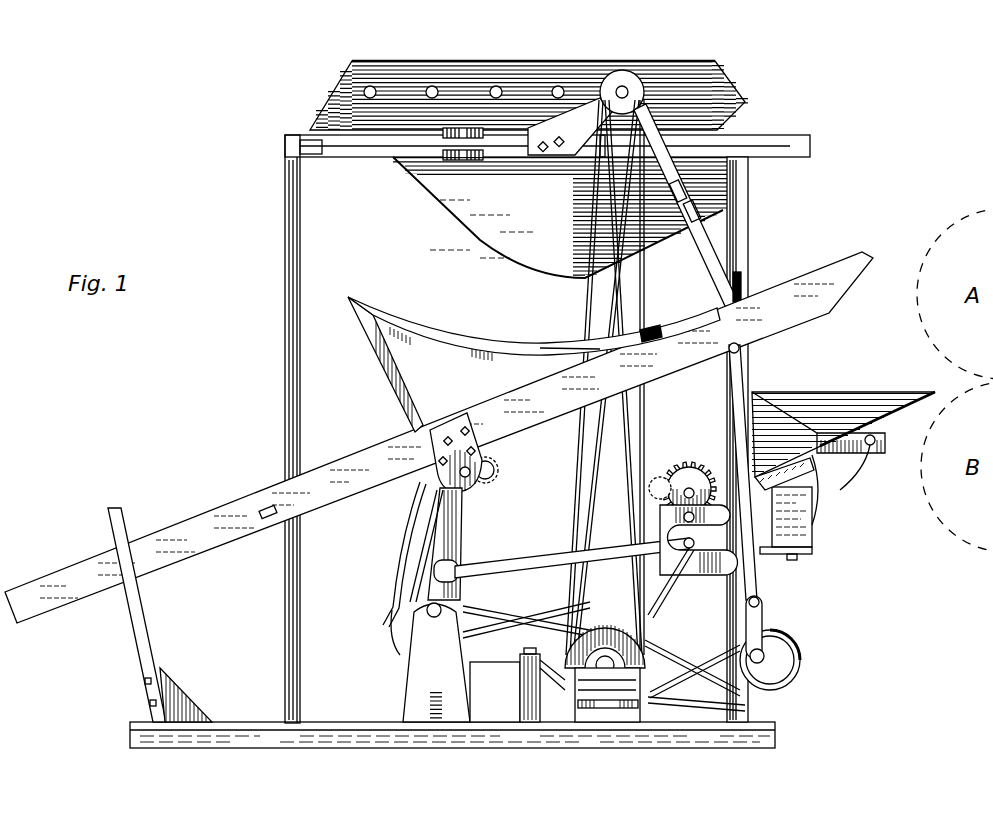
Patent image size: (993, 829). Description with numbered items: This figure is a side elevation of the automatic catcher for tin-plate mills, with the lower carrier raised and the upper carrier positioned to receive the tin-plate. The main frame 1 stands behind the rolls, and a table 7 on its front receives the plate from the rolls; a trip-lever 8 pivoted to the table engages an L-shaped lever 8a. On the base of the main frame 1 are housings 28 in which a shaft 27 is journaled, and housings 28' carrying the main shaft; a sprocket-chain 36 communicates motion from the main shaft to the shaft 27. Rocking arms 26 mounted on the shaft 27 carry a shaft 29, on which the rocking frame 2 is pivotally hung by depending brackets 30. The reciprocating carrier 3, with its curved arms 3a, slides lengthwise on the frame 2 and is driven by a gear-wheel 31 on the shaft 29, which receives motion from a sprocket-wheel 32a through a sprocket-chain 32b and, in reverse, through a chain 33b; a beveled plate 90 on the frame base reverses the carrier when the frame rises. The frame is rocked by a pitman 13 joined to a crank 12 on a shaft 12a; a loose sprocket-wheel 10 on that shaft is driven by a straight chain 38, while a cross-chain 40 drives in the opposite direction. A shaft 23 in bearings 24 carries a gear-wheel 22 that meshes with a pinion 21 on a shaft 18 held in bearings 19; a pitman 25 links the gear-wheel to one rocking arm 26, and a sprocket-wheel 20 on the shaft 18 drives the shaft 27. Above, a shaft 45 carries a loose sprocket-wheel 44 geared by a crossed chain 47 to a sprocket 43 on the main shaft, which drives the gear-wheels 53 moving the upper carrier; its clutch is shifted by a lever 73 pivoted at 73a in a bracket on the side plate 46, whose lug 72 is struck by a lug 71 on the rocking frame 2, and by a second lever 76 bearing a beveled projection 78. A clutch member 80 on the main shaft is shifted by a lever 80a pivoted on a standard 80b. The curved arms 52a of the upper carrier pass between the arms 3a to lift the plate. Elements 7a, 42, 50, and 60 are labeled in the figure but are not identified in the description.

The main frame 1 is at (452, 441).
The rocking frame 2 is at (439, 437).
The reciprocating carrier 3 is at (392, 390).
The curved arms 3a is at (470, 325).
The table 7 is at (843, 414).
The bracket edge 7a is at (900, 402).
The trip-lever 8 is at (858, 392).
The L-shaped lever 8a is at (818, 486).
The sprocket-wheel 10 is at (785, 652).
The crank 12 is at (764, 616).
The shaft 12a is at (766, 658).
The pitman 13 is at (752, 578).
The shaft 18 is at (690, 555).
The bearings 19 is at (680, 545).
The sprocket-wheel 20 is at (660, 568).
The pinion 21 is at (675, 585).
The gear-wheel 22 is at (698, 465).
The shaft 23 is at (680, 494).
The bearings 24 is at (652, 480).
The pitman 25 is at (530, 566).
The rocking arms 26 is at (449, 544).
The shaft 27 is at (434, 618).
The housings 28 is at (436, 663).
The housings 28' is at (607, 708).
The shaft 29 is at (470, 470).
The depending brackets 30 is at (444, 428).
The gear-wheel 31 is at (495, 478).
The sprocket-wheel 32a is at (398, 626).
The sprocket-chain 32b is at (430, 572).
The chain 33b is at (425, 520).
The sprocket-chain 36 is at (490, 612).
The straight chain 38 is at (712, 694).
The cross-chain 40 is at (692, 669).
The rod 42 is at (742, 285).
The sprocket 43 is at (596, 640).
The sprocket-wheel 44 is at (606, 72).
The shaft 45 is at (624, 92).
The side plate 46 is at (558, 217).
The crossed chain 47 is at (590, 300).
The bar 50 is at (578, 354).
The curved arms 52a is at (652, 322).
The gear-wheels 53 is at (370, 88).
The top bar 60 is at (770, 145).
The lug 71 is at (728, 322).
The lug 72 is at (750, 318).
The shifting-lever 73 is at (745, 228).
The pivot 73a is at (700, 210).
The second shifting-lever 76 is at (380, 150).
The beveled projection 78 is at (312, 140).
The clutch member 80 is at (530, 685).
The shifting-lever 80a is at (553, 658).
The standard 80b is at (501, 692).
The beveled plate 90 is at (143, 604).